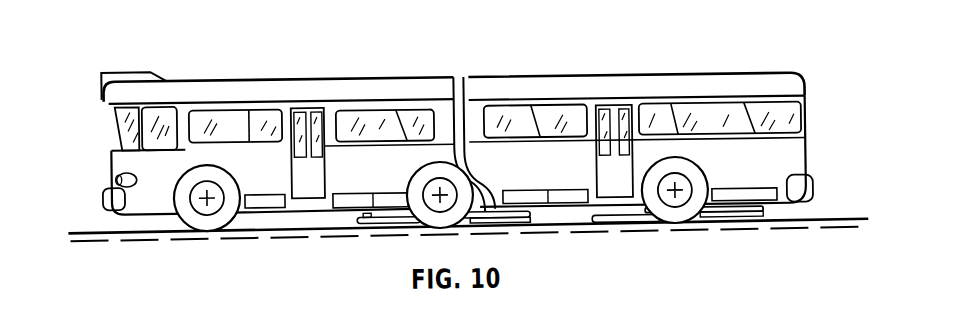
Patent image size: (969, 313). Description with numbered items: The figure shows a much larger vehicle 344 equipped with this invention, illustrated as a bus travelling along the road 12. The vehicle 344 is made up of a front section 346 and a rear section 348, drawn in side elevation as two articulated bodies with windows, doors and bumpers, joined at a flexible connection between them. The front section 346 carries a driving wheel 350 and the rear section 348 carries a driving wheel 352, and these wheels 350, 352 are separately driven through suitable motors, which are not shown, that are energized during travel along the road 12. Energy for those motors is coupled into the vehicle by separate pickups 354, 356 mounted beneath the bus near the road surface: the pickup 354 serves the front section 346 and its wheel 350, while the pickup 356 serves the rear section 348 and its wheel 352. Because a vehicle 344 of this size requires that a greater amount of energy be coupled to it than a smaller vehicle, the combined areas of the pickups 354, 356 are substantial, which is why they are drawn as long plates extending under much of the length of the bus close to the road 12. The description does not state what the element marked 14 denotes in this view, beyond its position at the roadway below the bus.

The vehicle 344 is at (477, 46).
The front section 346 is at (302, 75).
The rear section 348 is at (667, 72).
The driving wheel 350 is at (417, 177).
The driving wheel 352 is at (694, 174).
The pickup 354 is at (352, 215).
The pickup 356 is at (772, 217).
The road 12 is at (829, 222).
The embedded conductor in roadway 14 is at (718, 233).